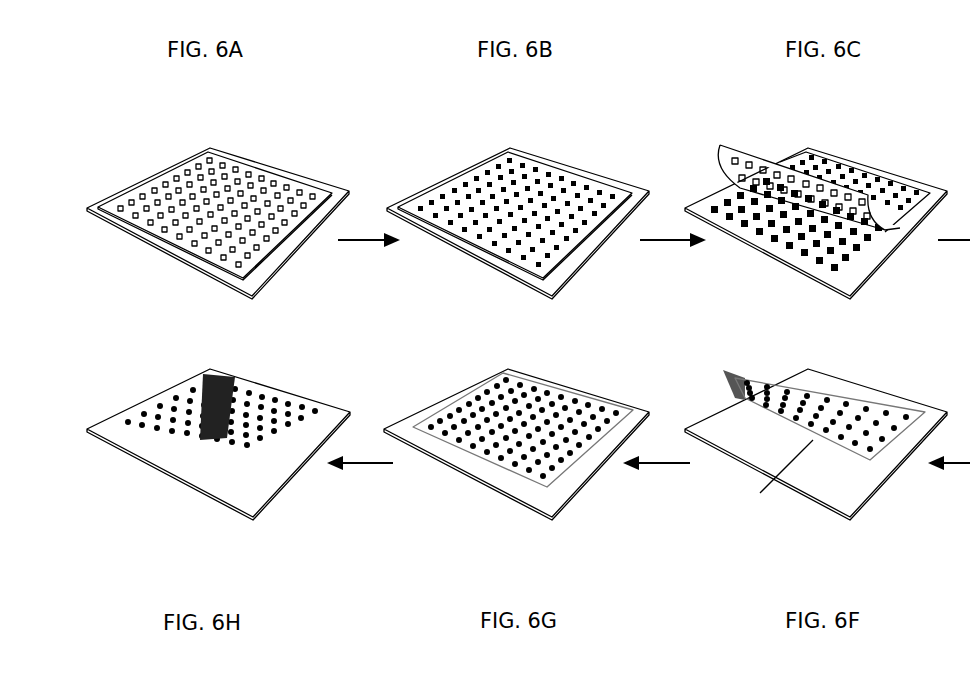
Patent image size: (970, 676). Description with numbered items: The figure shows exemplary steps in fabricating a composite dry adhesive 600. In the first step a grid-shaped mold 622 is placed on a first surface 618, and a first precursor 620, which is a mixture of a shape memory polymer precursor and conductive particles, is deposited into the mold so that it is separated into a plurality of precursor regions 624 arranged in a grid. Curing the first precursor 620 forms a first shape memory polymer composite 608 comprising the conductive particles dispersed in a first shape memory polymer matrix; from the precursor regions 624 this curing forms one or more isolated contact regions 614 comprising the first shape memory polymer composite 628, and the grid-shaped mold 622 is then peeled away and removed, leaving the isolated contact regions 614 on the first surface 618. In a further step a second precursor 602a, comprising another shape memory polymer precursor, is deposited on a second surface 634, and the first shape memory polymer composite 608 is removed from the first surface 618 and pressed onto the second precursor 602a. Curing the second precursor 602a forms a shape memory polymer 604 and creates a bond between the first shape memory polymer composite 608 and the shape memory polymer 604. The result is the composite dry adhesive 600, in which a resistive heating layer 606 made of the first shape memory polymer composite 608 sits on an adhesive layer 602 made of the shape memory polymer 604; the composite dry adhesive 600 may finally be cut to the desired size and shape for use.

In FIG. 6H, the composite dry adhesive 600 is at (218, 448).
In FIG. 6H, the adhesive layer 602 is at (218, 453).
In FIG. 6G, the adhesive layer 602 is at (523, 466).
In FIG. 6H, the shape memory polymer 604 is at (250, 450).
In FIG. 6G, the shape memory polymer 604 is at (493, 463).
In FIG. 6F, the second precursor 602a is at (764, 481).
In FIG. 6H, the resistive heating layer 606 is at (207, 402).
In FIG. 6G, the resistive heating layer 606 is at (538, 410).
In FIG. 6F, the resistive heating layer 606 is at (824, 402).
In FIG. 6H, the first shape memory polymer composite 608 is at (170, 403).
In FIG. 6G, the first shape memory polymer composite 608 is at (537, 385).
In FIG. 6F, the first shape memory polymer composite 608 is at (742, 375).
In FIG. 6C, the isolated contact regions 614 is at (773, 235).
In FIG. 6C, the first shape memory polymer composite 628 is at (827, 257).
In FIG. 6A, the first surface 618 is at (163, 258).
In FIG. 6B, the first surface 618 is at (477, 263).
In FIG. 6B, the first precursor 620 is at (510, 180).
In FIG. 6B, the precursor regions 624 is at (515, 210).
In FIG. 6A, the grid-shaped mold 622 is at (176, 176).
In FIG. 6B, the grid-shaped mold 622 is at (600, 182).
In FIG. 6C, the grid-shaped mold 622 is at (742, 150).
In FIG. 6G, the second surface 634 is at (580, 487).
In FIG. 6F, the second surface 634 is at (827, 507).